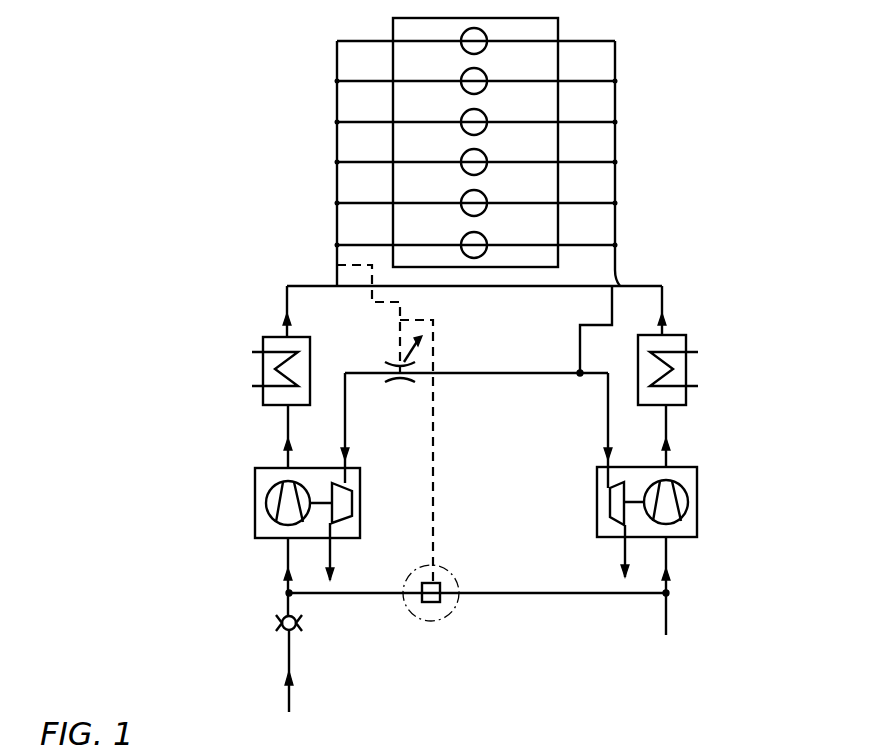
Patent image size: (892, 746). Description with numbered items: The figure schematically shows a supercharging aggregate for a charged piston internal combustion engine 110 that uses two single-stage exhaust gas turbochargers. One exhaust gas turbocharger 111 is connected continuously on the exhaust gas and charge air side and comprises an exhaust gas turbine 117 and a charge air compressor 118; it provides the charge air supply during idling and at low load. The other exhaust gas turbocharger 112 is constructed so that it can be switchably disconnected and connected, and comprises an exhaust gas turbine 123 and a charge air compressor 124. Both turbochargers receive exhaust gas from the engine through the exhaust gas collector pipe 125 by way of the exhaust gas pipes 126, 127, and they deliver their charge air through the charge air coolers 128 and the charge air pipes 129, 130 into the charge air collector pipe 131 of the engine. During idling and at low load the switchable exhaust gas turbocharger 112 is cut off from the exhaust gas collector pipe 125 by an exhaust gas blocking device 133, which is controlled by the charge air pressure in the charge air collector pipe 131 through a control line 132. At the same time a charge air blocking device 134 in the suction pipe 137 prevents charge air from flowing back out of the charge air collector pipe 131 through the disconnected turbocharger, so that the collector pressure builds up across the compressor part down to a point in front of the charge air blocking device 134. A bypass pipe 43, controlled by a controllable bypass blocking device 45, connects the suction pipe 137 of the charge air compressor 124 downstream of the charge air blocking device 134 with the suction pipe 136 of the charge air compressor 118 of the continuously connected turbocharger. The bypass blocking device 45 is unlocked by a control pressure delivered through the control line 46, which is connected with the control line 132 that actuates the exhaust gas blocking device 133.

The piston internal combustion engine 110 is at (548, 32).
The exhaust gas collector pipe 125 is at (615, 153).
The charge air collector pipe 131 is at (337, 140).
The charge air pipe 130 is at (305, 283).
The charge air pipe 129 is at (650, 285).
The exhaust gas pipe 126 is at (580, 372).
The control line 132 is at (372, 300).
The exhaust gas pipe 127 is at (368, 372).
The exhaust gas blocking device 133 is at (408, 380).
The control line 46 is at (433, 488).
The charge air cooler 128 is at (277, 345).
The exhaust gas turbocharger 112 is at (306, 492).
The charge air compressor 124 is at (268, 505).
The exhaust gas turbine 123 is at (352, 512).
The exhaust gas turbocharger 111 is at (653, 491).
The charge air compressor 118 is at (683, 512).
The exhaust gas turbine 117 is at (610, 505).
The bypass pipe 43 is at (357, 595).
The bypass blocking device 45 is at (441, 606).
The suction pipe 137 is at (284, 583).
The suction pipe 136 is at (668, 584).
The charge air blocking device 134 is at (280, 628).